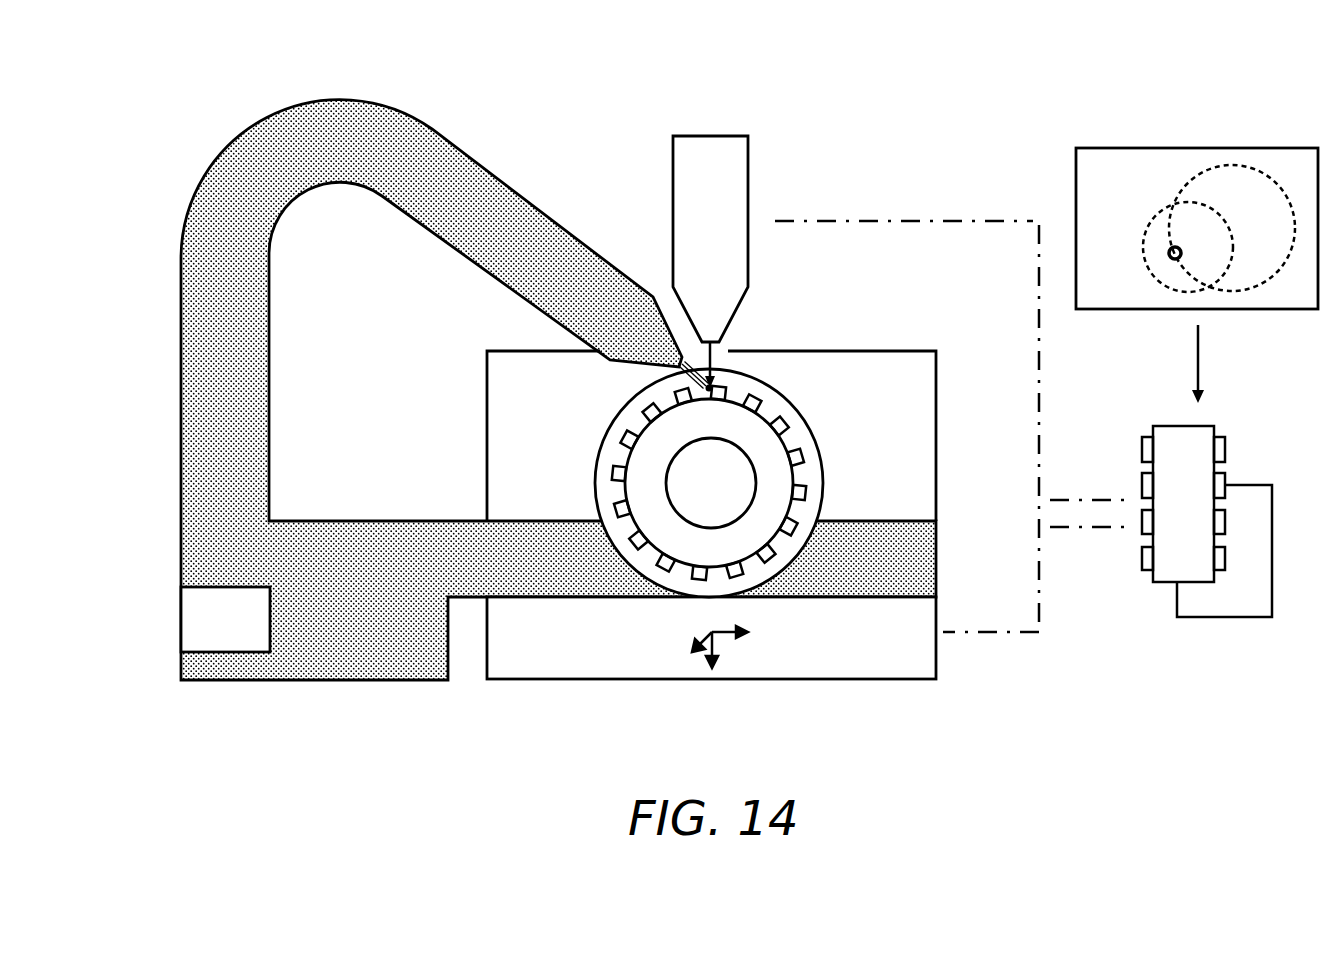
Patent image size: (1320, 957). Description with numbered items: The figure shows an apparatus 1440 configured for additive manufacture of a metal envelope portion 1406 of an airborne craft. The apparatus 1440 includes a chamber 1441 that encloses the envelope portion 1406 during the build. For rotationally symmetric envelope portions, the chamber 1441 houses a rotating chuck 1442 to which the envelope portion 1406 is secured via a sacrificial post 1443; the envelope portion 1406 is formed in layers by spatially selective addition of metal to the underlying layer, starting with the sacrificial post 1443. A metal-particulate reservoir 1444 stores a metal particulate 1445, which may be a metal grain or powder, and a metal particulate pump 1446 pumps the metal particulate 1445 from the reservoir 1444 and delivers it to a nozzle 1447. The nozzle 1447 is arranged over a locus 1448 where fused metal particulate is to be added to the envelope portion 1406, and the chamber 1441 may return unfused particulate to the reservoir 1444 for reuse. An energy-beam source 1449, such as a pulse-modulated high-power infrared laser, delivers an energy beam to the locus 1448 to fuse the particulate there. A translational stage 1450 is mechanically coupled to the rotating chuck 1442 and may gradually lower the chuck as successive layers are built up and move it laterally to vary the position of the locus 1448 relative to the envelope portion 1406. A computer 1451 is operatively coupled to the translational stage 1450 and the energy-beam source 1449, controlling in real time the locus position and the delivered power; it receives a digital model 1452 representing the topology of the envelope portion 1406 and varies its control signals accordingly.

The apparatus 1440 is at (136, 120).
The chamber 1441 is at (563, 469).
The rotating chuck 1442 is at (823, 467).
The sacrificial post 1443 is at (738, 495).
The metal-particulate reservoir 1444 is at (180, 447).
The metal particulate 1445 is at (384, 629).
The metal particulate pump 1446 is at (254, 629).
The nozzle 1447 is at (655, 370).
The locus 1448 is at (703, 400).
The energy-beam source 1449 is at (738, 222).
The translational stage 1450 is at (919, 656).
The computer 1451 is at (1142, 605).
The digital model 1452 is at (1139, 290).
The envelope portion 1406 is at (812, 434).